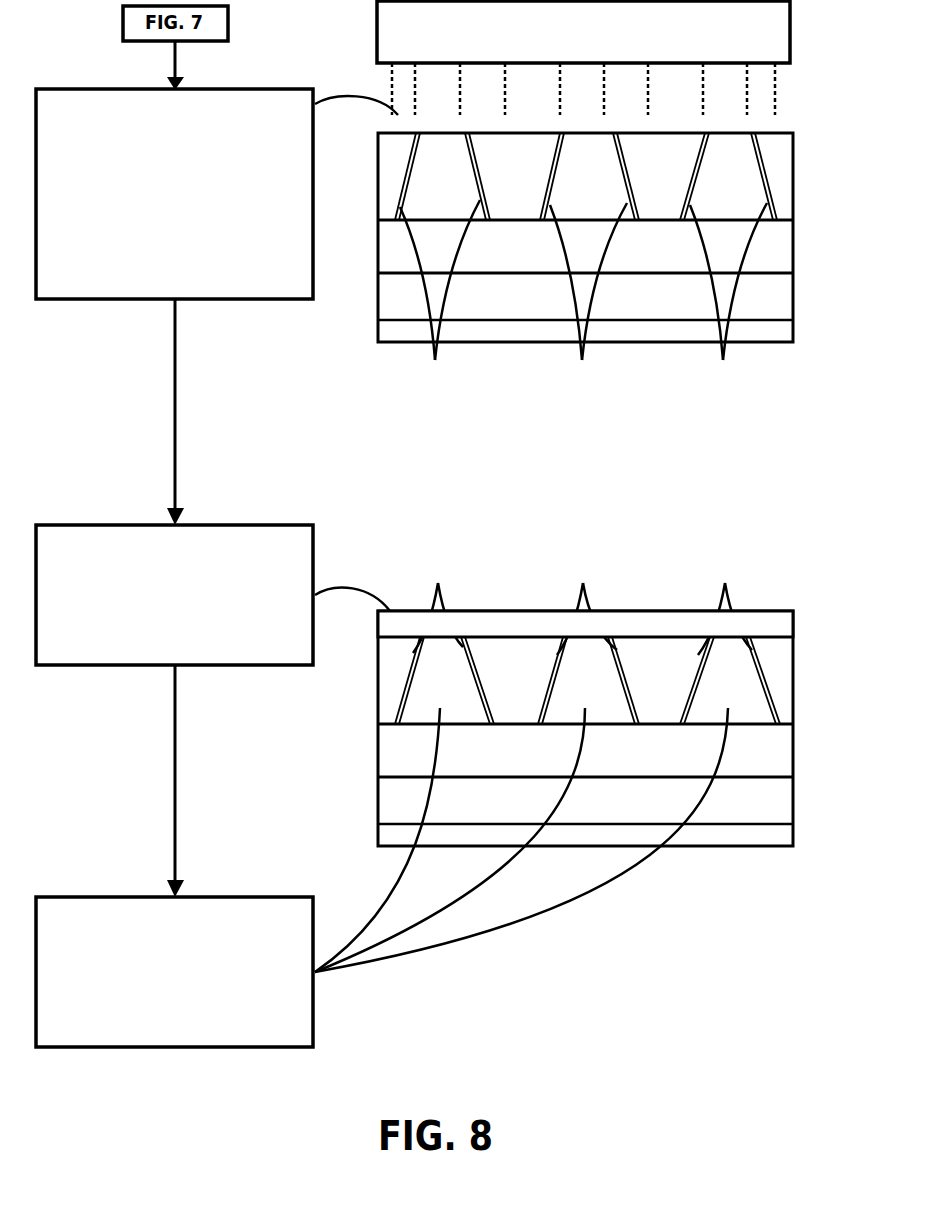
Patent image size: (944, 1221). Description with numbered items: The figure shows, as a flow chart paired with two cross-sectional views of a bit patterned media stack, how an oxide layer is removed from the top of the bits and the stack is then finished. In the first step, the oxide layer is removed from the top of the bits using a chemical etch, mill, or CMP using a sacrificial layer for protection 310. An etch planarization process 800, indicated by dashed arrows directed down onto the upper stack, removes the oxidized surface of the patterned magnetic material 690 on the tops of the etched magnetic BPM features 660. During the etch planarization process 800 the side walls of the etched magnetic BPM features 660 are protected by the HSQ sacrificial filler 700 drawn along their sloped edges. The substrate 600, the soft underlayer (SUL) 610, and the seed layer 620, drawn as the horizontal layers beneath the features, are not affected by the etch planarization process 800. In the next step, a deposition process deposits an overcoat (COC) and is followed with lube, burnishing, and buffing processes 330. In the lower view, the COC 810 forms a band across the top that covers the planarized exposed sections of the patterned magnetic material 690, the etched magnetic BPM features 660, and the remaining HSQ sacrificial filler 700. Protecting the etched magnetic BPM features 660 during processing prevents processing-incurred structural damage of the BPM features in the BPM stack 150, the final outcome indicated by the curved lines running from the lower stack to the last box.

The BPM stack 150 is at (297, 917).
The remove oxide layer from the top of bits using a chemical etch, mill, or CMP usin 310 is at (47, 98).
The deposit overcoat (COC) followed with lube, burnishing, and buffing processes 330 is at (50, 542).
The substrate 600 is at (783, 333).
The soft underlayer (SUL) 610 is at (783, 303).
The seed layer 620 is at (783, 250).
The etched magnetic BPM features 660 is at (440, 162).
The patterned magnetic material 690 is at (583, 427).
The HSQ sacrificial filler 700 is at (395, 188).
The etch planarization process 800 is at (778, 42).
The COC 810 is at (793, 613).